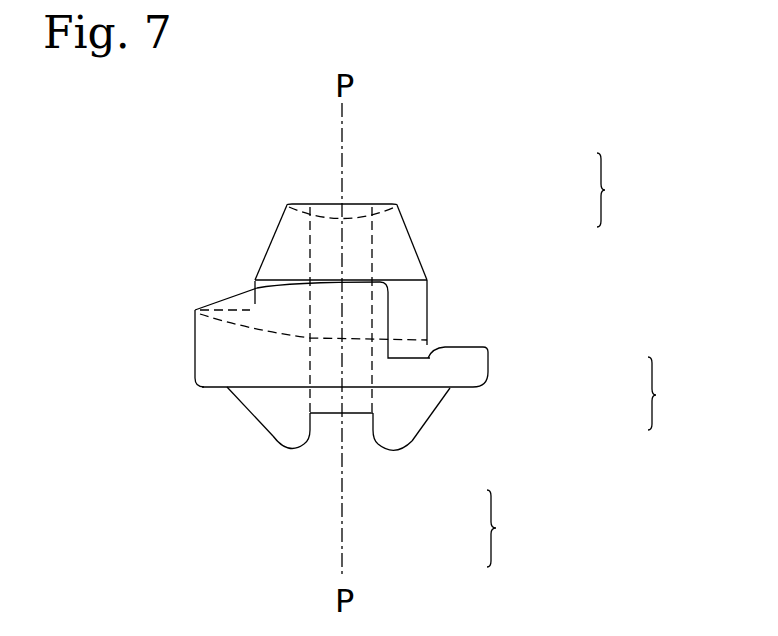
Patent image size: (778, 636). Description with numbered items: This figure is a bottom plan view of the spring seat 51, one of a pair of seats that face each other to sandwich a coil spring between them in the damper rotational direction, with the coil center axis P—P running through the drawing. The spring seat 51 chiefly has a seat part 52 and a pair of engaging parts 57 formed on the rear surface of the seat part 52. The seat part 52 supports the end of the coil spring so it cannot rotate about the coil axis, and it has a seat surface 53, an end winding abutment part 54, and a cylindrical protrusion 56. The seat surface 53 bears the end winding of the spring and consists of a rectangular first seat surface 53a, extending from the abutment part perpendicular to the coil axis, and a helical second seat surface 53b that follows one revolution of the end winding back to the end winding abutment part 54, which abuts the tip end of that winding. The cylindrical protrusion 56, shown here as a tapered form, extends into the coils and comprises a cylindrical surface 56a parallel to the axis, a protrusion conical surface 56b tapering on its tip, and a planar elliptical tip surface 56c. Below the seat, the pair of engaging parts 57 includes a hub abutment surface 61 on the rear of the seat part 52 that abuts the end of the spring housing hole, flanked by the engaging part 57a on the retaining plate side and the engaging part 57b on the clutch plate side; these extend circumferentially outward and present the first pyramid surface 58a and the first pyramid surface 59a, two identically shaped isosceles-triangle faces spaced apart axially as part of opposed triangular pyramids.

The spring seat 51 is at (557, 316).
The seat part 52 is at (262, 190).
The seat surface 53 is at (454, 393).
The first seat surface 53a is at (440, 347).
The second seat surface 53b is at (228, 294).
The end winding abutment part 54 is at (388, 308).
The cylindrical protrusion 56 is at (452, 216).
The cylindrical surface 56a is at (427, 280).
The protrusion conical surface 56b is at (409, 233).
The tip surface 56c is at (378, 204).
The engaging parts 57 is at (382, 477).
The engaging part 57a is at (273, 437).
The engaging part 57b is at (405, 430).
The first pyramid surface 58a is at (312, 443).
The first pyramid surface 59a is at (371, 428).
The hub abutment surface 61 is at (332, 415).